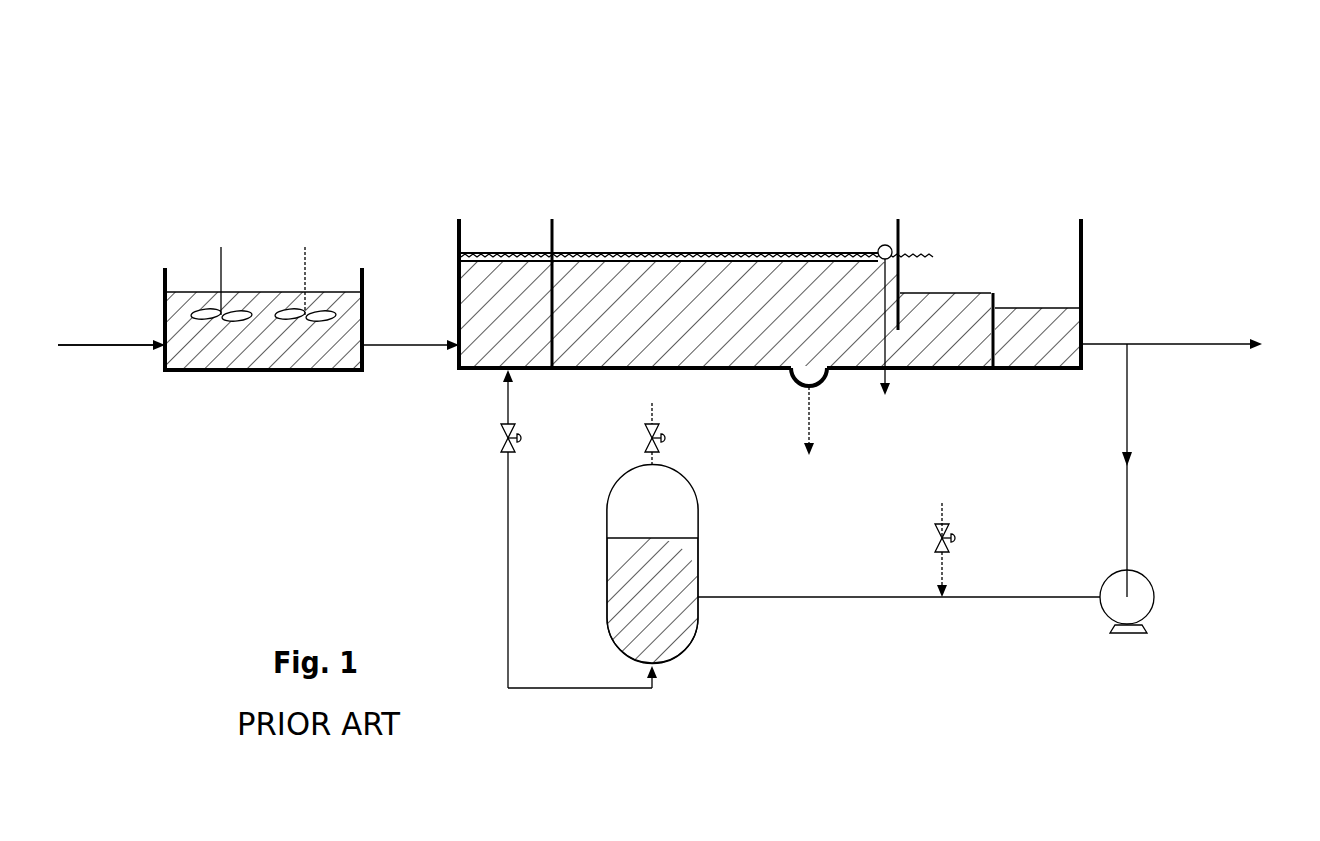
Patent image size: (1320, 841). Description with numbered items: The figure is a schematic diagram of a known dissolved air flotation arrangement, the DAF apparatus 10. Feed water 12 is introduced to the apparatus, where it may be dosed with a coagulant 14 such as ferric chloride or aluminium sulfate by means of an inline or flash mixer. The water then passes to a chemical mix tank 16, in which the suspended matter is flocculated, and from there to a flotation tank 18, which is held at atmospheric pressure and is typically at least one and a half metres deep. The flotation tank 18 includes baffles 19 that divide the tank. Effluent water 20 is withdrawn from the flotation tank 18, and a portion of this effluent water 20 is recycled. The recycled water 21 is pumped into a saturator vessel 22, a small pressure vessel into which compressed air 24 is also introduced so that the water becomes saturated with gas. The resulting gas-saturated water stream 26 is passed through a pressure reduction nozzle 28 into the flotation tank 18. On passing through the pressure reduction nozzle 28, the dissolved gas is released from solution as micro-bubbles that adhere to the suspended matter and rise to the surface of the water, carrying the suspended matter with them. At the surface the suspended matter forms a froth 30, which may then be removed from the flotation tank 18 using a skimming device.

The DAF apparatus 10 is at (926, 616).
The feed water 12 is at (108, 357).
The coagulant 14 is at (111, 337).
The chemical mix tank 16 is at (312, 321).
The flotation tank 18 is at (787, 335).
The baffles 19 is at (739, 292).
The effluent water 20 is at (1188, 344).
The recycled water 21 is at (1138, 470).
The saturator vessel 22 is at (663, 533).
The compressed air 24 is at (943, 539).
The gas-saturated water stream 26 is at (582, 677).
The pressure reduction nozzle 28 is at (519, 529).
The froth 30 is at (697, 306).